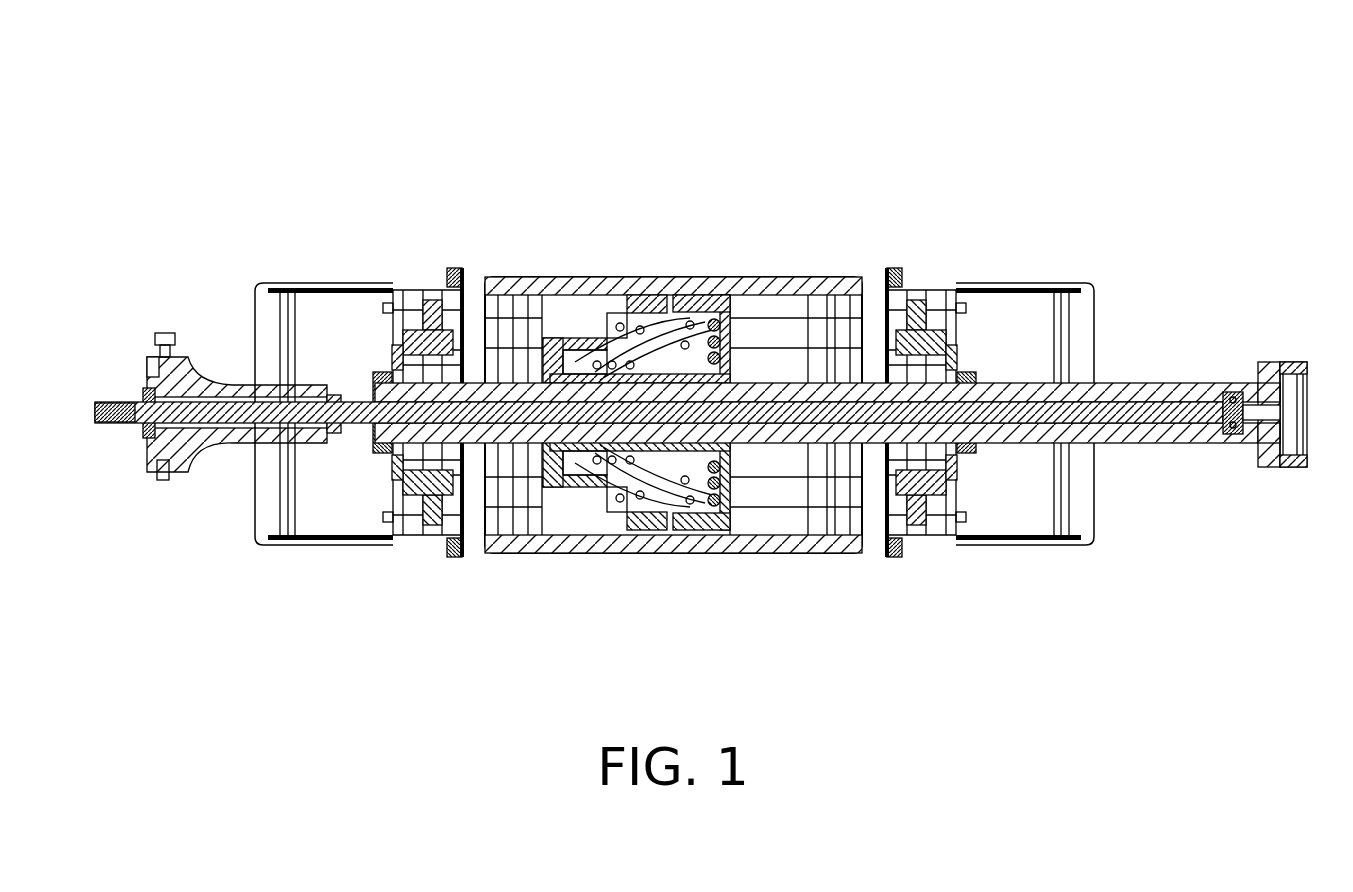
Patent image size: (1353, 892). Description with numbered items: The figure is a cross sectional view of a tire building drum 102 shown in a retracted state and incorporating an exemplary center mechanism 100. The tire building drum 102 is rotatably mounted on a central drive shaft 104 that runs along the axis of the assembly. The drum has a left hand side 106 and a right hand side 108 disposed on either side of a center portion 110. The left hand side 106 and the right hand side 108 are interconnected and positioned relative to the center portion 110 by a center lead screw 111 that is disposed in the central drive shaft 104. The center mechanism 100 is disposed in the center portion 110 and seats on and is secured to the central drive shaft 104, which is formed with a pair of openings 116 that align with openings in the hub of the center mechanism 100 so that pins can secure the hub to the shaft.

The center mechanism 100 is at (808, 176).
The tire building drum 102 is at (945, 197).
The central drive shaft 104 is at (188, 478).
The left hand side 106 is at (316, 283).
The right hand side 108 is at (1010, 283).
The center portion 110 is at (803, 280).
The center lead screw 111 is at (1127, 400).
The openings 116 is at (640, 388).